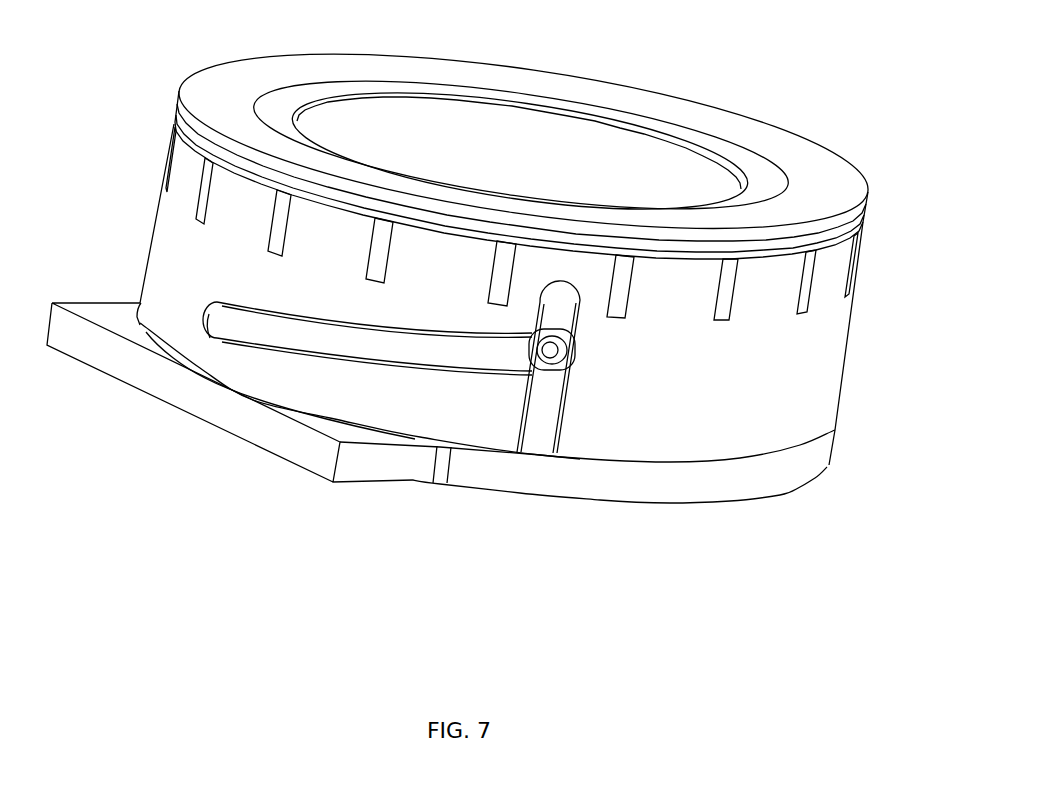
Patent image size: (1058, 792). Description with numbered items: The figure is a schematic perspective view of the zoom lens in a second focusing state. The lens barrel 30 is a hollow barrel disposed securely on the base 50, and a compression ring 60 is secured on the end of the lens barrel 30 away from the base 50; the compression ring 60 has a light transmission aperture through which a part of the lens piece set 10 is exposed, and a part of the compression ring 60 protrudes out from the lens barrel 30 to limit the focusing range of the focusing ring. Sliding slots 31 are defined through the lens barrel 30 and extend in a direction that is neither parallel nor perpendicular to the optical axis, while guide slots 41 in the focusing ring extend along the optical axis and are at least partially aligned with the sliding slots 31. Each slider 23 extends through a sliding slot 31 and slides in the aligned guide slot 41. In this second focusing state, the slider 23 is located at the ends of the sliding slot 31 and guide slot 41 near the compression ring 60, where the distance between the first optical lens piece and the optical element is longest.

The lens piece set 10 is at (560, 142).
The compression ring 60 is at (793, 155).
The lens barrel 30 is at (833, 322).
The sliding slot 31 is at (232, 318).
The guide slot 41 is at (547, 422).
The slider 23 is at (544, 352).
The base 50 is at (318, 443).